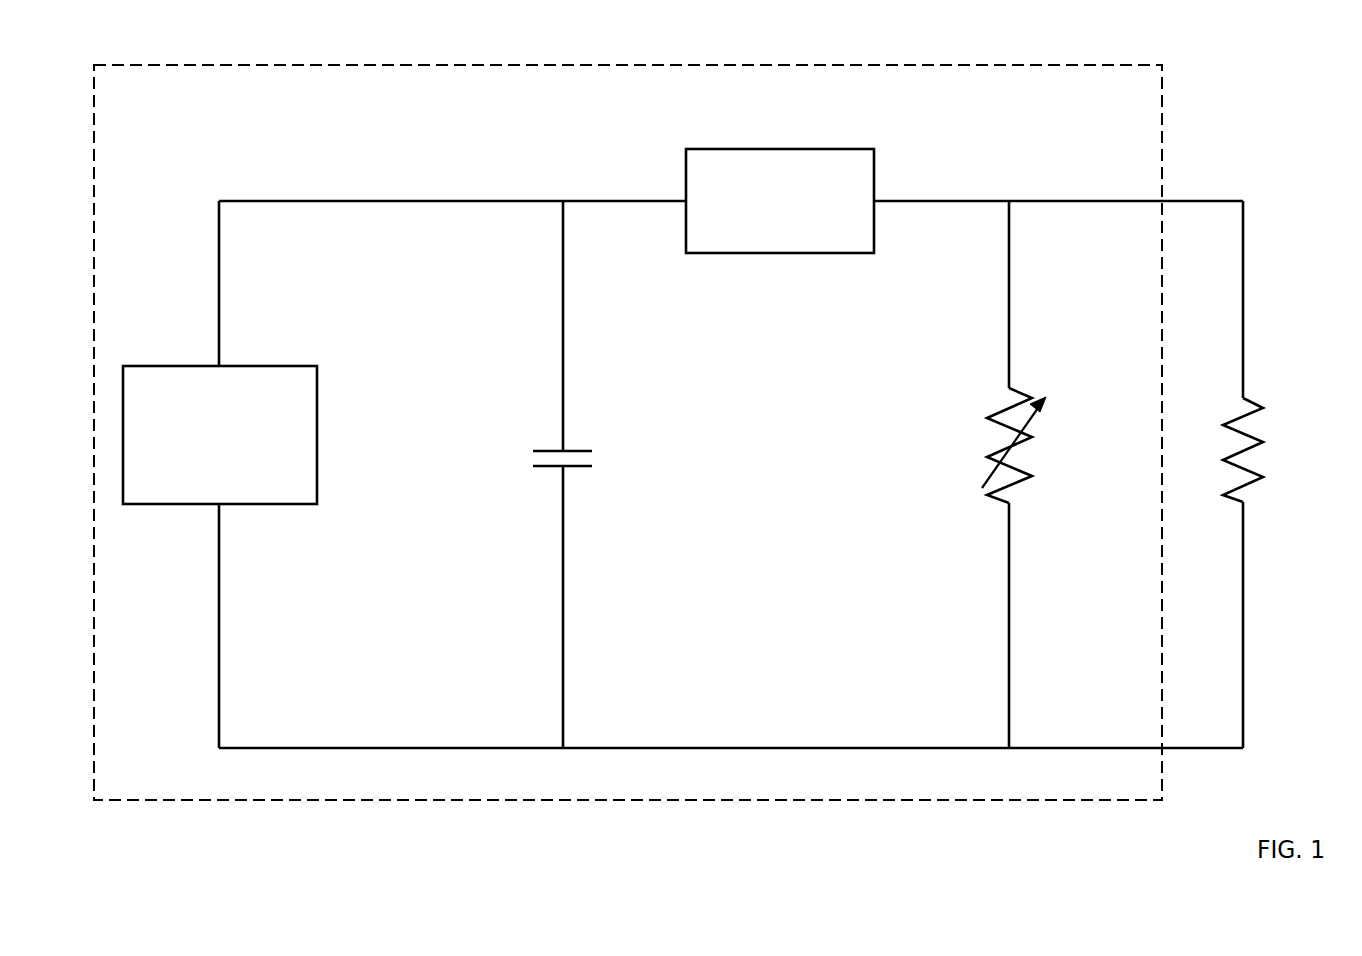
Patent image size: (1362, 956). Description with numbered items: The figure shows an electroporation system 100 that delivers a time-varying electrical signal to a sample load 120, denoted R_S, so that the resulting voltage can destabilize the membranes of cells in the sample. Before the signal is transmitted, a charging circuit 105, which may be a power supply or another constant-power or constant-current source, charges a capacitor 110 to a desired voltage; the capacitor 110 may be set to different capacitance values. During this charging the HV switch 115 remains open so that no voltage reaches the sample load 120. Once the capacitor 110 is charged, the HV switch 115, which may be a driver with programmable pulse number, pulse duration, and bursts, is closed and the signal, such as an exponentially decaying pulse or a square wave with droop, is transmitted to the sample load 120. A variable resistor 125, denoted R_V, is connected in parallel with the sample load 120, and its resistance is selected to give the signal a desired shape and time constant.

The electroporation system 100 is at (1162, 150).
The charging circuit 105 is at (175, 366).
The capacitor 110 is at (524, 452).
The HV switch 115 is at (748, 149).
The sample load 120 is at (1268, 408).
The variable resistor 125 is at (968, 462).